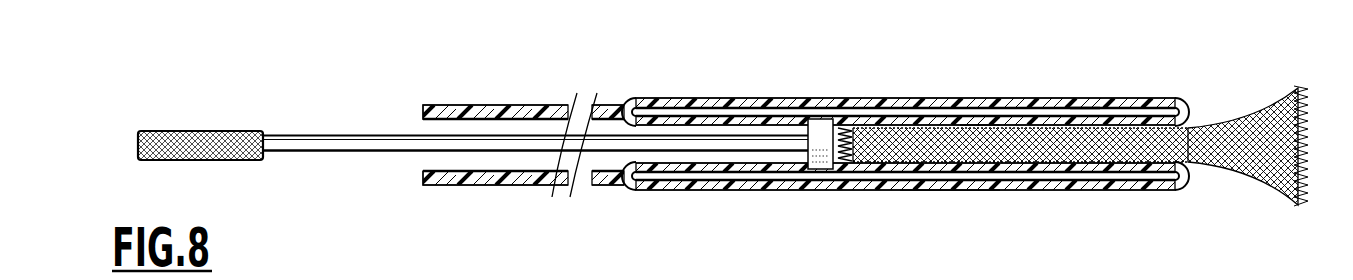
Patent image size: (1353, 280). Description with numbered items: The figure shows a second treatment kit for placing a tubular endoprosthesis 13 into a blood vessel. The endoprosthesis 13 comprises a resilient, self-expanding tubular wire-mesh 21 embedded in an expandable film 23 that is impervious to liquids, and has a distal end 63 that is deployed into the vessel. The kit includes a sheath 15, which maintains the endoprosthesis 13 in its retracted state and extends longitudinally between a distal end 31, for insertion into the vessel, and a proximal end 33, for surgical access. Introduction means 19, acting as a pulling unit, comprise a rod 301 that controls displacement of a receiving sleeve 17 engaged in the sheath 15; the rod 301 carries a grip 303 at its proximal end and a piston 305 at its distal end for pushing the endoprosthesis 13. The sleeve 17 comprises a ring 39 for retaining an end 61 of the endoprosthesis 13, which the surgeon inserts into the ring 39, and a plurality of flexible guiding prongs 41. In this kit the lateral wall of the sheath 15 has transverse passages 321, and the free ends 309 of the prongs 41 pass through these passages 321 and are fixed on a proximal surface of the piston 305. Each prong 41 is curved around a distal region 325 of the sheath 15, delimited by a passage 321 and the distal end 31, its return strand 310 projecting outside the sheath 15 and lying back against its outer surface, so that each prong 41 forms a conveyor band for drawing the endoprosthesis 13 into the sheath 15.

The grip 303 is at (193, 138).
The proximal end 33 is at (422, 114).
The sheath 15 is at (508, 106).
The transverse passages 321 is at (637, 97).
The free ends 309 is at (807, 118).
The end 61 is at (860, 118).
The sleeve 17 is at (902, 100).
The distal region 325 is at (978, 110).
The flexible guiding prongs 41 is at (1028, 99).
The return strand 310 is at (1085, 110).
The distal end 31 is at (1172, 107).
The expandable film 23 is at (1258, 108).
The introduction means 19 is at (357, 157).
The rod 301 is at (391, 145).
The piston 305 is at (825, 170).
The ring 39 is at (858, 163).
The tubular endoprosthesis 13 is at (940, 193).
The tubular wire-mesh 21 is at (1070, 150).
The distal end 63 is at (1277, 173).